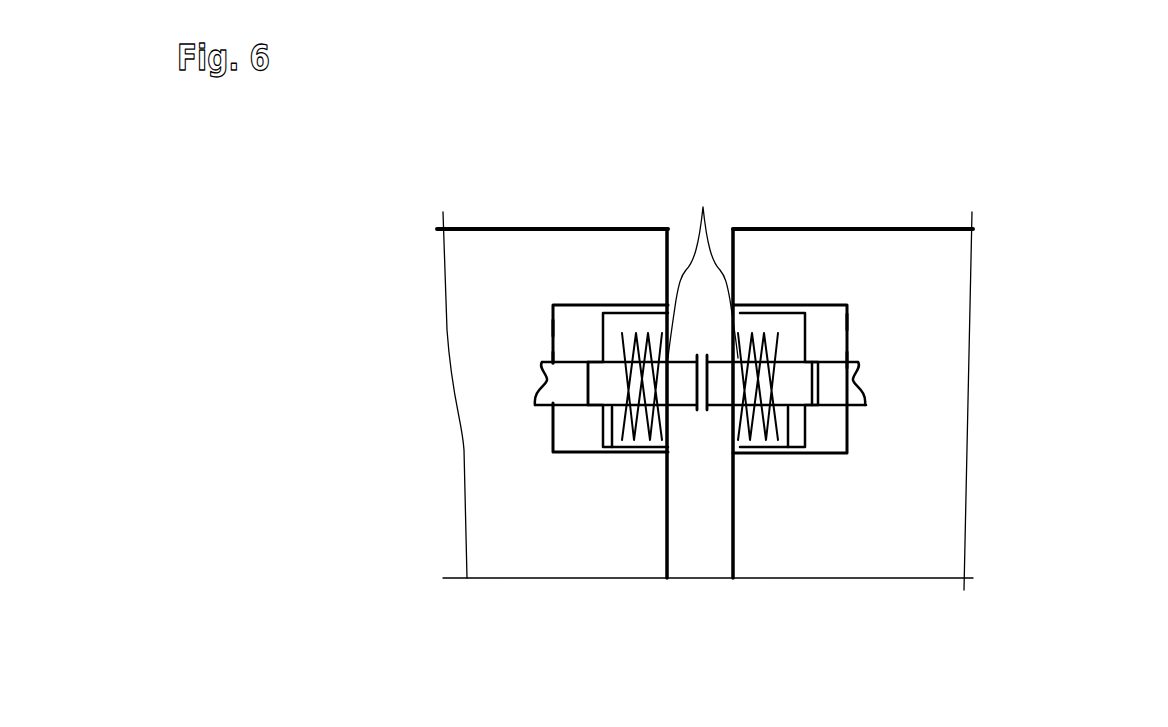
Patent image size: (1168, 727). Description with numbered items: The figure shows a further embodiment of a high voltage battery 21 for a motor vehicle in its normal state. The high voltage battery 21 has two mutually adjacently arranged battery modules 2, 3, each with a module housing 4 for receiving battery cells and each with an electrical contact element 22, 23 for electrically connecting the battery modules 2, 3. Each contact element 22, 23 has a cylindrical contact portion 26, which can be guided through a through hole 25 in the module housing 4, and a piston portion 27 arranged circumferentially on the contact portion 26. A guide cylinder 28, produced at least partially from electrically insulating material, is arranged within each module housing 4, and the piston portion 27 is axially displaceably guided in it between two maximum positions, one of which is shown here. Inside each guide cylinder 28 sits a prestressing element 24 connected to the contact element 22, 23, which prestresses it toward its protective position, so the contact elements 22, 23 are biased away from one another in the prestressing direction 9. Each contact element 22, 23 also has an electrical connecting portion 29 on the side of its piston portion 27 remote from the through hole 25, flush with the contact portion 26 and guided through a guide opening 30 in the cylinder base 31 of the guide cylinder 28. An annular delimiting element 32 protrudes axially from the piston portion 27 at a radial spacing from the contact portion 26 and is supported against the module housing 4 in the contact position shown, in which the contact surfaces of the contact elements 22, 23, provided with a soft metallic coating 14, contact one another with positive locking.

The battery module 2 is at (463, 215).
The battery module 3 is at (962, 214).
The module housing 4 is at (495, 229).
The prestressing direction 9 is at (520, 383).
The soft metallic coating 14 is at (703, 410).
The high voltage battery 21 is at (1037, 348).
The electrical contact element 22 is at (645, 335).
The electrical contact element 23 is at (762, 345).
The prestressing element 24 is at (645, 430).
The through hole 25 is at (703, 207).
The contact portion 26 is at (623, 430).
The piston portion 27 is at (612, 420).
The guide cylinder 28 is at (578, 305).
The electrical connecting portion 29 is at (565, 390).
The guide opening 30 is at (545, 368).
The cylinder base 31 is at (553, 328).
The annular delimiting element 32 is at (652, 340).